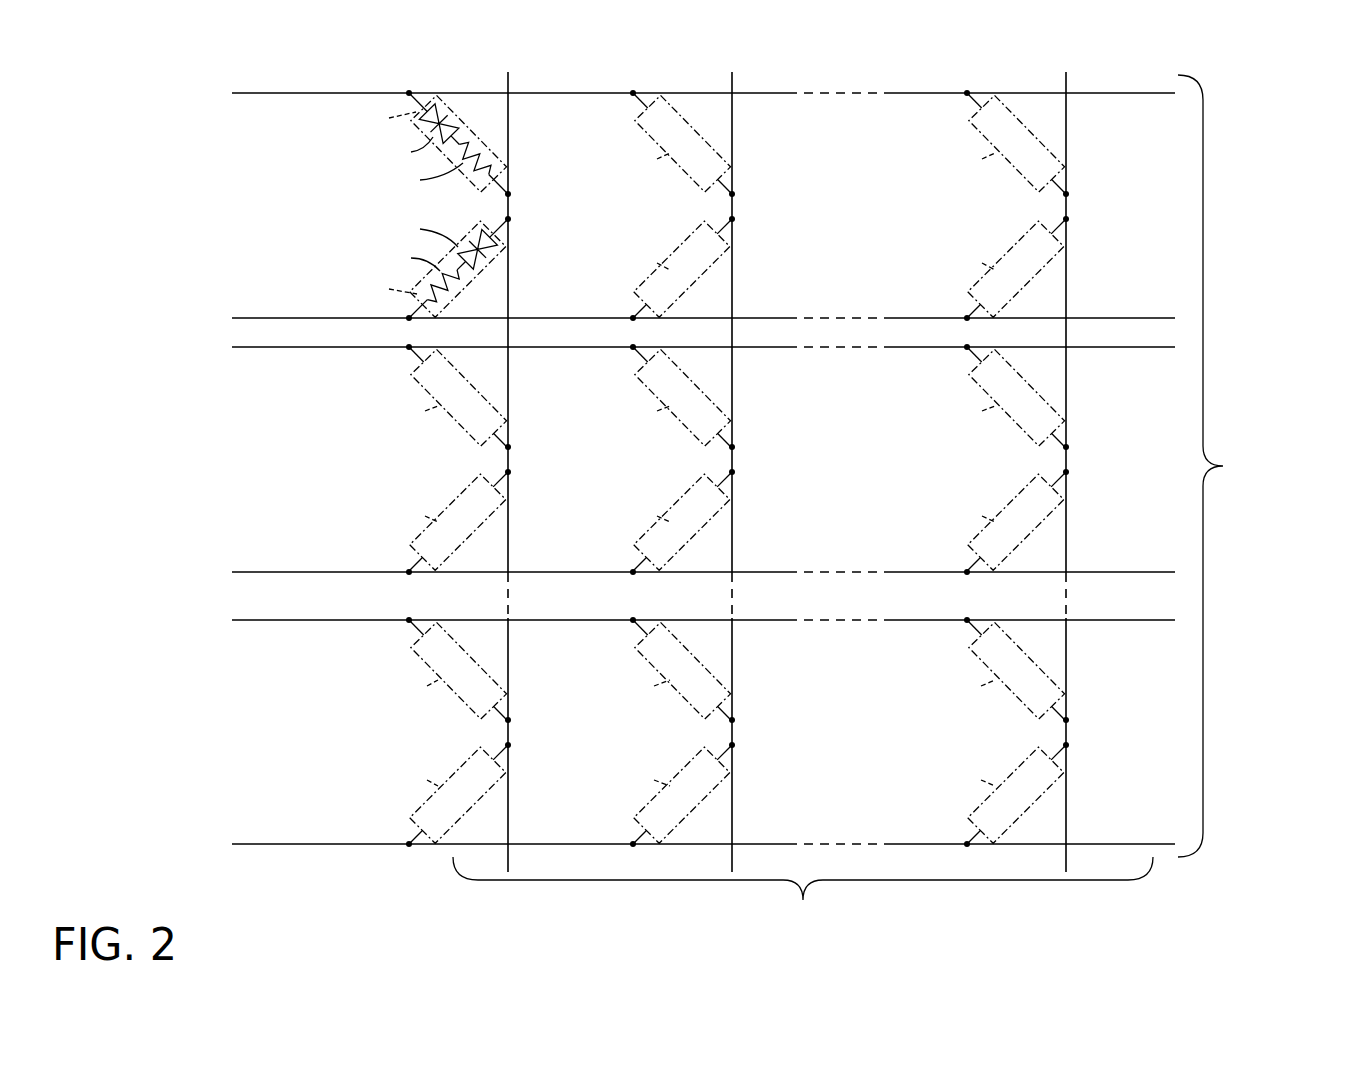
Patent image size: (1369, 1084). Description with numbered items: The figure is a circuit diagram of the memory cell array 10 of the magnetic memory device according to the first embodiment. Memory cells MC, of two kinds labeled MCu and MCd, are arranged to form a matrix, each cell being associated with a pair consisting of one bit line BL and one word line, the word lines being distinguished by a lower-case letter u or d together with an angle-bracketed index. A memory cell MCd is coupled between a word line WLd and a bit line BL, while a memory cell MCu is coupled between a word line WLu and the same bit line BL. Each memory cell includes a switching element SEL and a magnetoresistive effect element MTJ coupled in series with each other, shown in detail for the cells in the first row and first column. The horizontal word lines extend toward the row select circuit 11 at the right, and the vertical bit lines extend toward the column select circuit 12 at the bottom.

The memory cell array 10 is at (115, 158).
The row select circuit 11 is at (1266, 466).
The column select circuit 12 is at (803, 896).